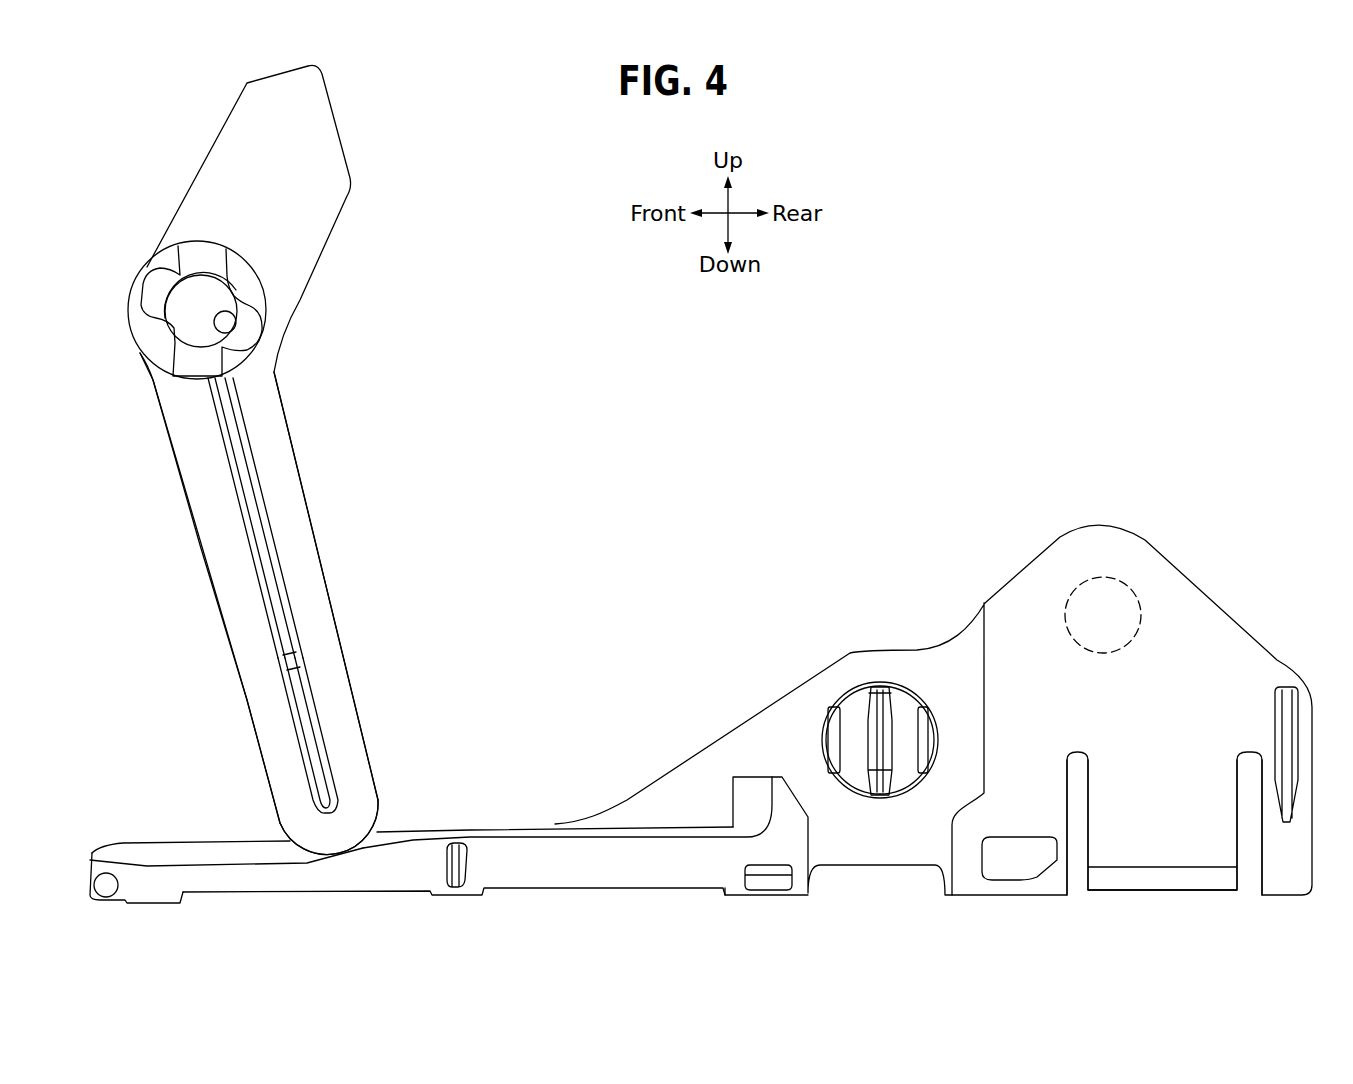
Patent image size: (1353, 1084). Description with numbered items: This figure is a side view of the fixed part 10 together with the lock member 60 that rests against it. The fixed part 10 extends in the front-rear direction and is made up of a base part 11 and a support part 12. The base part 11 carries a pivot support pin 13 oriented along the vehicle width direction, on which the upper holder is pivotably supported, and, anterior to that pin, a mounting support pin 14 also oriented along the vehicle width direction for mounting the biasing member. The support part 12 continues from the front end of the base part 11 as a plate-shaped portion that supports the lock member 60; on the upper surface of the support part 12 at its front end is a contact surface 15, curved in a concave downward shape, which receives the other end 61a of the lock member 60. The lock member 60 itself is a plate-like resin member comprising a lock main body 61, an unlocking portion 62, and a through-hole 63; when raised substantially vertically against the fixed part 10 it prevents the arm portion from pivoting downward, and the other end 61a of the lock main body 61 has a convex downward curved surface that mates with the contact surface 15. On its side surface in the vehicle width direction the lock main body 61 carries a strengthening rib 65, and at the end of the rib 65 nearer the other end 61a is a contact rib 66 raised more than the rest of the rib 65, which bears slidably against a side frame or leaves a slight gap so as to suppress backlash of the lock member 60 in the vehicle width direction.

The fixed part 10 is at (701, 724).
The base part 11 is at (1160, 817).
The support part 12 is at (617, 862).
The pivot support pin 13 is at (1133, 605).
The mounting support pin 14 is at (897, 723).
The contact surface 15 is at (195, 867).
The lock member 60 is at (274, 505).
The lock main body 61 is at (288, 530).
The other end 61a is at (360, 852).
The unlocking portion 62 is at (323, 175).
The through-hole 63 is at (236, 314).
The rib 65 is at (275, 595).
The contact rib 66 is at (310, 733).